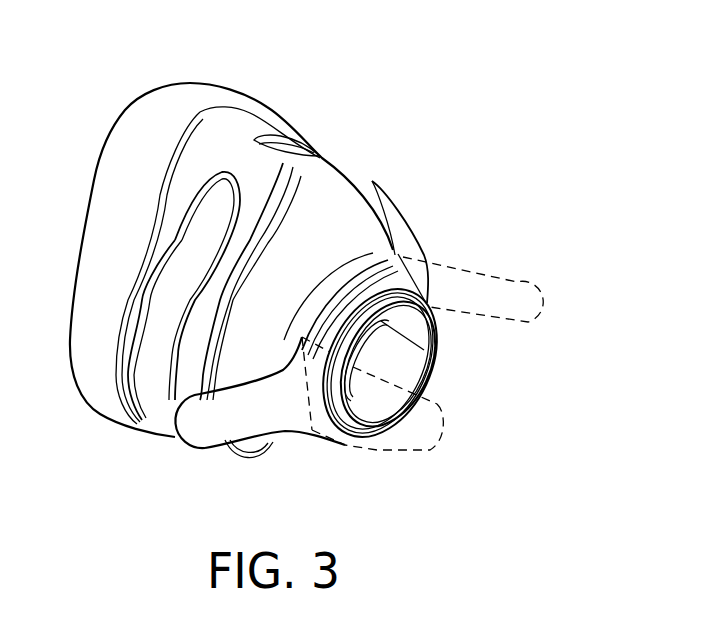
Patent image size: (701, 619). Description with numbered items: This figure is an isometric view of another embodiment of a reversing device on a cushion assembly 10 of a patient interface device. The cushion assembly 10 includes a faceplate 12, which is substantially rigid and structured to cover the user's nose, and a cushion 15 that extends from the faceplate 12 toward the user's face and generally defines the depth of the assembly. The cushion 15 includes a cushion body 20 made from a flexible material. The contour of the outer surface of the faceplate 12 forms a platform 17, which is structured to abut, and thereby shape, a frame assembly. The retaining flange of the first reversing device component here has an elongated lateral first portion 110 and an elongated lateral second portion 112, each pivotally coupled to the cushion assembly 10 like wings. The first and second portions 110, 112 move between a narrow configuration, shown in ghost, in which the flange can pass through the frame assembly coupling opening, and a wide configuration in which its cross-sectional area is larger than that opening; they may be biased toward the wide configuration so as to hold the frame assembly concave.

The cushion assembly 10 is at (249, 124).
The faceplate 12 is at (322, 182).
The cushion 15 is at (220, 103).
The platform 17 is at (348, 212).
The cushion body 20 is at (169, 96).
The elongated lateral first portion 110 is at (194, 453).
The elongated lateral second portion 112 is at (398, 210).